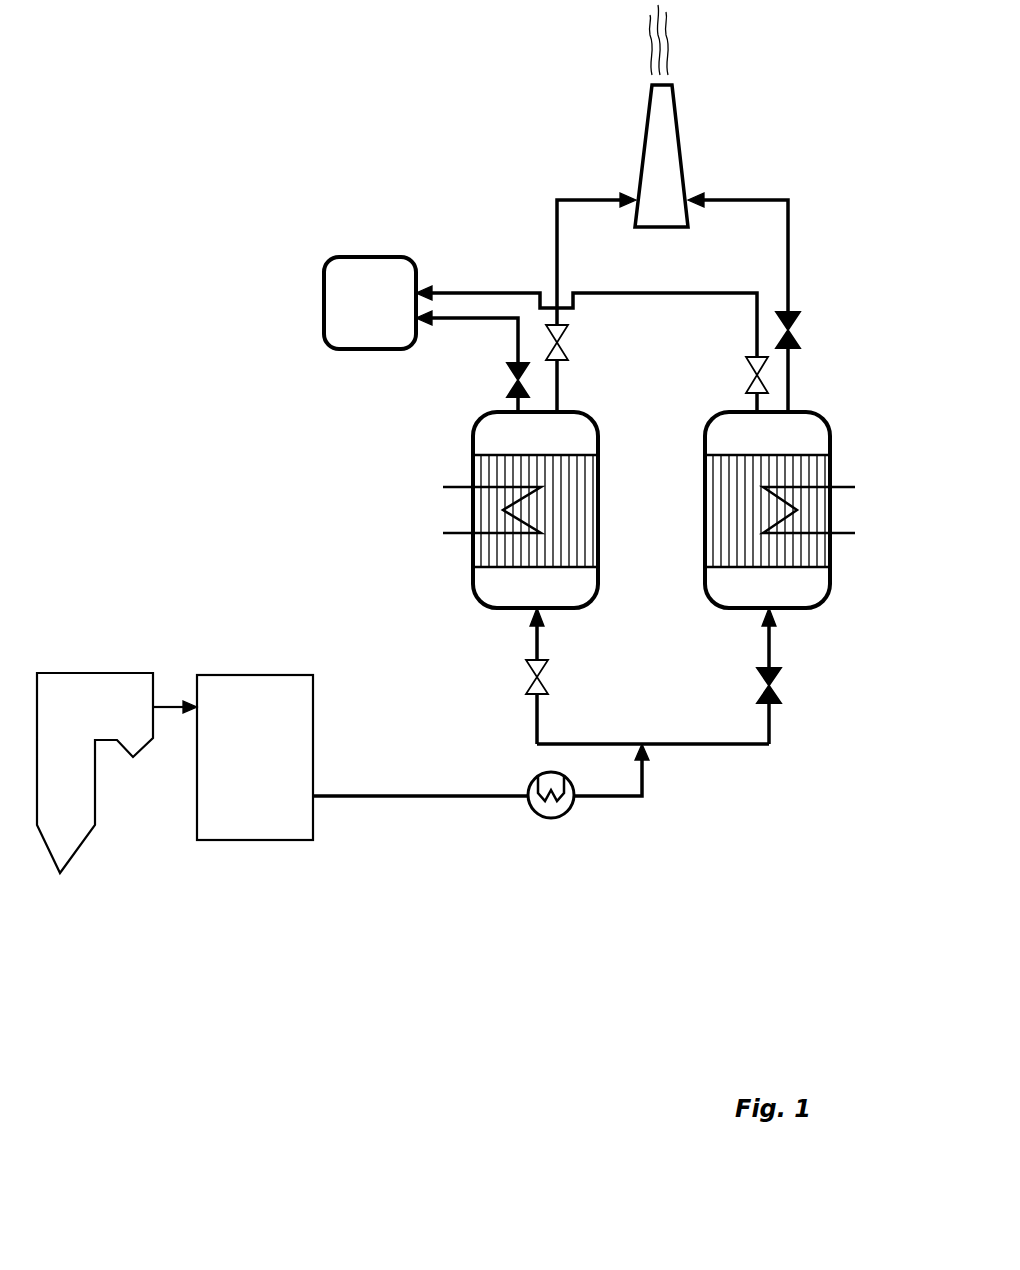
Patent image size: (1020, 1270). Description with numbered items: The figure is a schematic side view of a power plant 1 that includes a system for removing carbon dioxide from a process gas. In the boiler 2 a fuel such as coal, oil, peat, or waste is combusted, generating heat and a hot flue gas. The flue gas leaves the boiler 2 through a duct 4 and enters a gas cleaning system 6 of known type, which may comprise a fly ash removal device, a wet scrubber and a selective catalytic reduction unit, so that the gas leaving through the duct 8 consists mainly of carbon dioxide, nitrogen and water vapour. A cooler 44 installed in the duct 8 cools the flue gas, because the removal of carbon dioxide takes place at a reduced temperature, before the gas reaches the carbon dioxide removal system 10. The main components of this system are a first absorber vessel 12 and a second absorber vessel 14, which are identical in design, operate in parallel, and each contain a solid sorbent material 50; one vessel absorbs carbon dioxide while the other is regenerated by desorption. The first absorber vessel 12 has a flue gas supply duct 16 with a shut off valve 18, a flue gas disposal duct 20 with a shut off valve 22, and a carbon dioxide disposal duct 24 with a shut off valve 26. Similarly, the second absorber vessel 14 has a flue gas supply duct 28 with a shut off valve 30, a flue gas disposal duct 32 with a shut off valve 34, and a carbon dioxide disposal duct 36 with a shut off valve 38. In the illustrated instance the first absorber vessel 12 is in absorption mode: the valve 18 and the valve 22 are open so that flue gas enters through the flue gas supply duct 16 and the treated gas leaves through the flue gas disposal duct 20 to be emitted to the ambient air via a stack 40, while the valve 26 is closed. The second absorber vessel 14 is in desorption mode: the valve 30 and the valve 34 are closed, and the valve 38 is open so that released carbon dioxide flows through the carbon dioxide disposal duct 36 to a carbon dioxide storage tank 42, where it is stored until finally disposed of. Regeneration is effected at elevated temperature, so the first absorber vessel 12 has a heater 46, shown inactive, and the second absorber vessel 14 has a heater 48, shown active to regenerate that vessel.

The power plant 1 is at (148, 182).
The boiler 2 is at (75, 672).
The duct 4 is at (176, 704).
The gas cleaning system 6 is at (258, 843).
The duct 8 is at (383, 800).
The carbon dioxide removal system 10 is at (503, 265).
The first absorber vessel 12 is at (473, 438).
The second absorber vessel 14 is at (830, 438).
The flue gas supply duct 16 is at (535, 722).
The shut off valve 18 is at (530, 672).
The flue gas disposal duct 20 is at (561, 380).
The shut off valve 22 is at (570, 328).
The carbon dioxide disposal duct 24 is at (513, 343).
The shut off valve 26 is at (505, 388).
The flue gas supply duct 28 is at (772, 726).
The shut off valve 30 is at (780, 682).
The flue gas disposal duct 32 is at (791, 240).
The shut off valve 34 is at (802, 320).
The carbon dioxide disposal duct 36 is at (755, 325).
The shut off valve 38 is at (755, 372).
The stack 40 is at (681, 140).
The carbon dioxide storage tank 42 is at (372, 255).
The cooler 44 is at (553, 819).
The heater 46 is at (447, 533).
The heater 48 is at (845, 533).
The solid sorbent material 50 is at (487, 465).